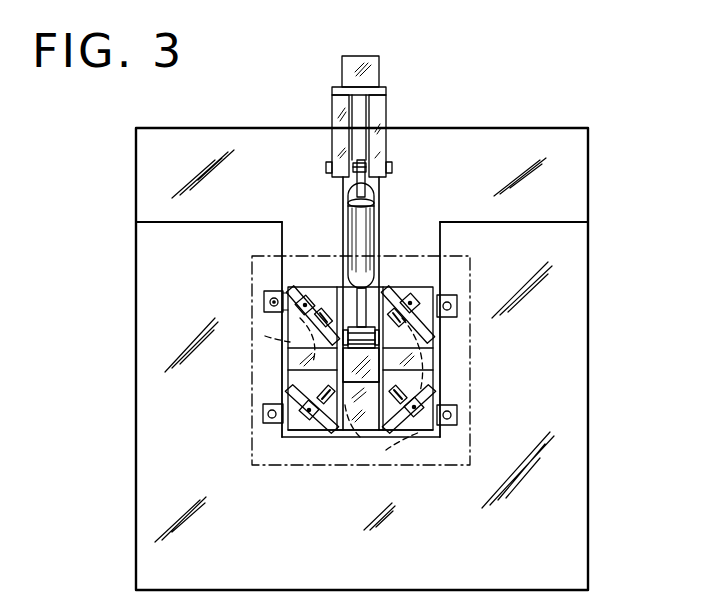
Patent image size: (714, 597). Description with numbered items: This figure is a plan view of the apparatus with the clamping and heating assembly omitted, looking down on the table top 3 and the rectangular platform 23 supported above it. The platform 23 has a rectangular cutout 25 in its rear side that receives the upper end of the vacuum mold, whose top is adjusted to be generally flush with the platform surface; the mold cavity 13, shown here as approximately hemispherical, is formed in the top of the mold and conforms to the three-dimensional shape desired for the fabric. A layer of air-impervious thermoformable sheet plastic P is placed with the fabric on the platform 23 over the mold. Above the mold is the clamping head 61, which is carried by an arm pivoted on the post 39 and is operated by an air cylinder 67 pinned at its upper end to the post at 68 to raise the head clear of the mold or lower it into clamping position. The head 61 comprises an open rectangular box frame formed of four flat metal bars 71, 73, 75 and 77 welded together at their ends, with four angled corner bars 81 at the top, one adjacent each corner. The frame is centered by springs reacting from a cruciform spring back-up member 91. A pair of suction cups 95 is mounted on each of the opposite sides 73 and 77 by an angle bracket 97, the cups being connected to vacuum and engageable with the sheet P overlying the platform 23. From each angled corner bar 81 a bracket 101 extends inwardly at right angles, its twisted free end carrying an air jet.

The top 3 is at (566, 191).
The rectangular platform 23 is at (566, 378).
The rectangular cutout 25 is at (437, 246).
The post 39 is at (361, 56).
The pin connection 68 is at (393, 167).
The air cylinder 67 is at (363, 231).
The flat metal bar 73 is at (282, 333).
The clamping head 61 is at (303, 436).
The cruciform spring back-up member 91 is at (294, 359).
The flat metal bar 77 is at (440, 360).
The flat metal bar 71 is at (365, 438).
The flat metal bar 75 is at (318, 291).
The angled corner bar 81 is at (292, 401).
The bracket 101 is at (382, 438).
The mold cavity 13 is at (447, 343).
The suction cup 95 is at (264, 301).
The angle bracket 97 is at (263, 417).
The sheet plastic material P is at (440, 468).